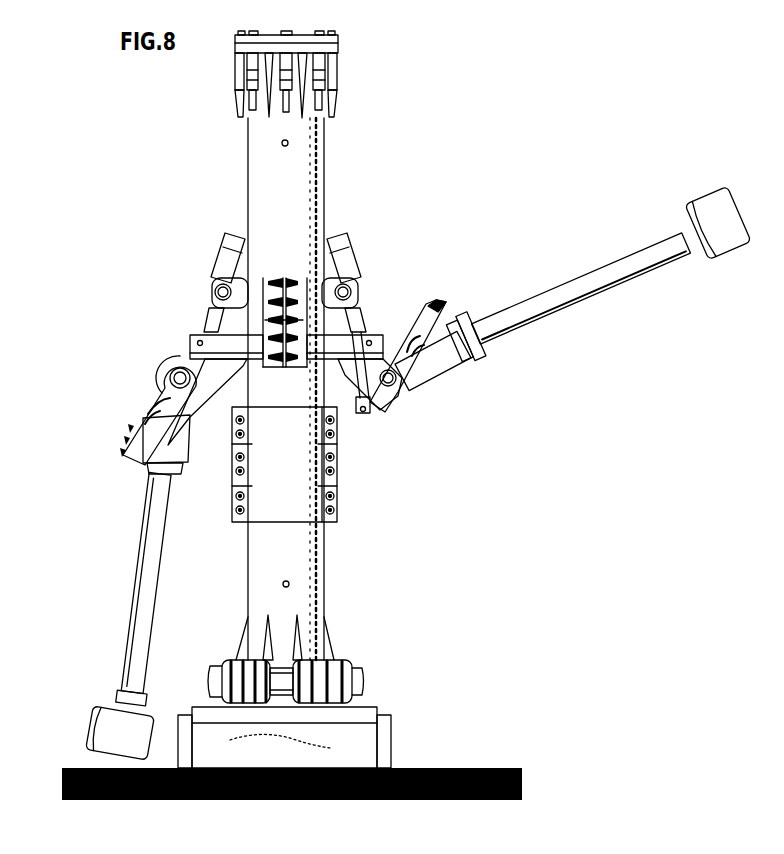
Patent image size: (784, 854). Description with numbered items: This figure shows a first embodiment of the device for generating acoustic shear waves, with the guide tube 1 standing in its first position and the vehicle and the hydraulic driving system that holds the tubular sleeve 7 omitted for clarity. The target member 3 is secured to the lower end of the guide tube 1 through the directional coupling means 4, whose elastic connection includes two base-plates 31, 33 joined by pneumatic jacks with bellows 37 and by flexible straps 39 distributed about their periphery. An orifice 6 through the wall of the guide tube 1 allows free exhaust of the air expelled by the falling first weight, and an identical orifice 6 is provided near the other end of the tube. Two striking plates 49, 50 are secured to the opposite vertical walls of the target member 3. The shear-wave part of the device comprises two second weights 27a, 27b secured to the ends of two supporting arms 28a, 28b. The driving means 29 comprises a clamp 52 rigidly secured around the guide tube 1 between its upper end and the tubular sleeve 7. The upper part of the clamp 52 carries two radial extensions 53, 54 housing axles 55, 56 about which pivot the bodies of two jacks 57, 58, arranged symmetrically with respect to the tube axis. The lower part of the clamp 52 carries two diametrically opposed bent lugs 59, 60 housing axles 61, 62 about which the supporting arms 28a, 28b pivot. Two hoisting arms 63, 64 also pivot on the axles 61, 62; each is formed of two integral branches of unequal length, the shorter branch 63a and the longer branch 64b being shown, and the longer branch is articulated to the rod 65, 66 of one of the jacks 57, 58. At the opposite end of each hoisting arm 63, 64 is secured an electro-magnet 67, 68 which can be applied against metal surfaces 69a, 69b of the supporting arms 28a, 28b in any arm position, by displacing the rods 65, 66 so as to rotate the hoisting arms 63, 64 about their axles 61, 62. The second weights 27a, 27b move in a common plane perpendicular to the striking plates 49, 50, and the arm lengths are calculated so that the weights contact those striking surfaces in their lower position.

The guide tube 1 is at (250, 142).
The target member 3 is at (360, 723).
The directional coupling means 4 is at (435, 620).
The orifice 6 is at (290, 143).
The tubular sleeve 7 is at (332, 512).
The second weight 27a is at (100, 737).
The second weight 27b is at (728, 248).
The supporting arm 28a is at (127, 672).
The supporting arm 28b is at (663, 260).
The driving means 29 is at (93, 320).
The base-plate 31 is at (357, 670).
The base-plate 33 is at (362, 688).
The pneumatic jacks with bellows 37 is at (358, 680).
The flexible straps 39 is at (337, 663).
The striking plate 49 is at (387, 742).
The striking plate 50 is at (185, 718).
The clamp 52 is at (285, 275).
The radial extension 53 is at (216, 295).
The radial extension 54 is at (351, 296).
The axle 55 is at (220, 287).
The axle 56 is at (350, 285).
The jack 57 is at (228, 253).
The jack 58 is at (345, 253).
The bent lug 59 is at (217, 375).
The bent lug 60 is at (342, 387).
The axle 61 is at (170, 375).
The axle 62 is at (391, 387).
The hoisting arm 63 is at (138, 398).
The shorter branch 63a is at (143, 418).
The hoisting arm 64 is at (412, 375).
The longer branch 64b is at (422, 315).
The rod 65 is at (207, 332).
The rod 66 is at (353, 337).
The electro-magnet 67 is at (135, 453).
The electro-magnet 68 is at (447, 312).
The metal surface 69a is at (152, 443).
The metal surface 69b is at (447, 337).